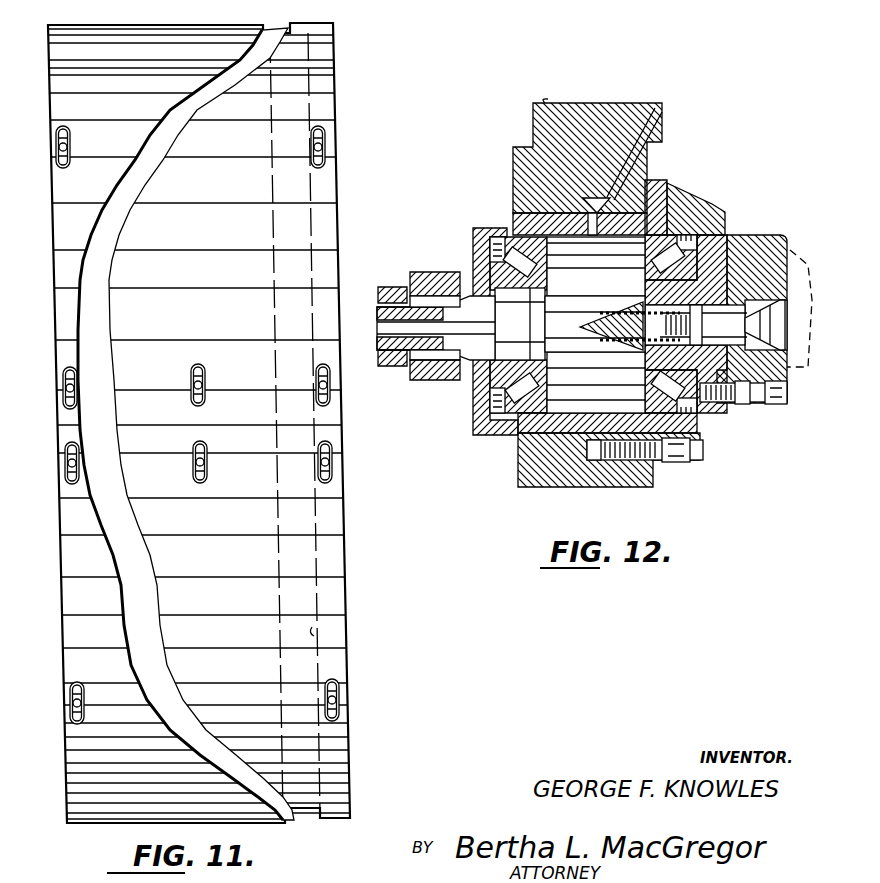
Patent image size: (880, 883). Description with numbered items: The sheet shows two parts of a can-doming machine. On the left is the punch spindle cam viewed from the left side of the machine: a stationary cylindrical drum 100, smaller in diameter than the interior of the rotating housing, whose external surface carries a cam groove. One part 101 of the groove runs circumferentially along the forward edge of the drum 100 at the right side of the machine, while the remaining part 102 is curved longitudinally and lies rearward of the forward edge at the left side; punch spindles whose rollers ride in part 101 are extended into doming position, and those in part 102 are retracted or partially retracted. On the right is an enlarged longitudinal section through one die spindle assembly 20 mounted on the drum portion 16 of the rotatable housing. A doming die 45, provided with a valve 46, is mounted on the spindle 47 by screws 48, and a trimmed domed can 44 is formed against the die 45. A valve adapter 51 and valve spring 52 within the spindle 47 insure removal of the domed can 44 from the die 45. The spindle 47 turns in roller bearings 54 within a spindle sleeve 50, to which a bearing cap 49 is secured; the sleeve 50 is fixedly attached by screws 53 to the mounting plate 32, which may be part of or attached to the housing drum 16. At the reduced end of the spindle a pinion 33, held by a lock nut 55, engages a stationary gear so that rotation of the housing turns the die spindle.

In FIG. 11, the stationary cylindrical drum 100 is at (325, 75).
In FIG. 11, the cam groove part 101 is at (315, 633).
In FIG. 11, the cam groove part 102 is at (107, 248).
In FIG. 12, the drum portion 16 is at (567, 483).
In FIG. 12, the die spindle assembly 20 is at (515, 460).
In FIG. 12, the mounting plate 32 is at (588, 104).
In FIG. 12, the pinion 33 is at (423, 283).
In FIG. 12, the trimmed domed can 44 is at (780, 390).
In FIG. 12, the doming die 45 is at (763, 245).
In FIG. 12, the valve 46 is at (780, 300).
In FIG. 12, the spindle 47 is at (580, 292).
In FIG. 12, the screws 48 is at (773, 404).
In FIG. 12, the bearing cap 49 is at (697, 203).
In FIG. 12, the spindle sleeve 50 is at (653, 223).
In FIG. 12, the valve adapter 51 is at (718, 304).
In FIG. 12, the valve spring 52 is at (612, 324).
In FIG. 12, the screws 53 is at (695, 455).
In FIG. 12, the roller bearings 54 is at (507, 237).
In FIG. 12, the lock nut 55 is at (393, 366).